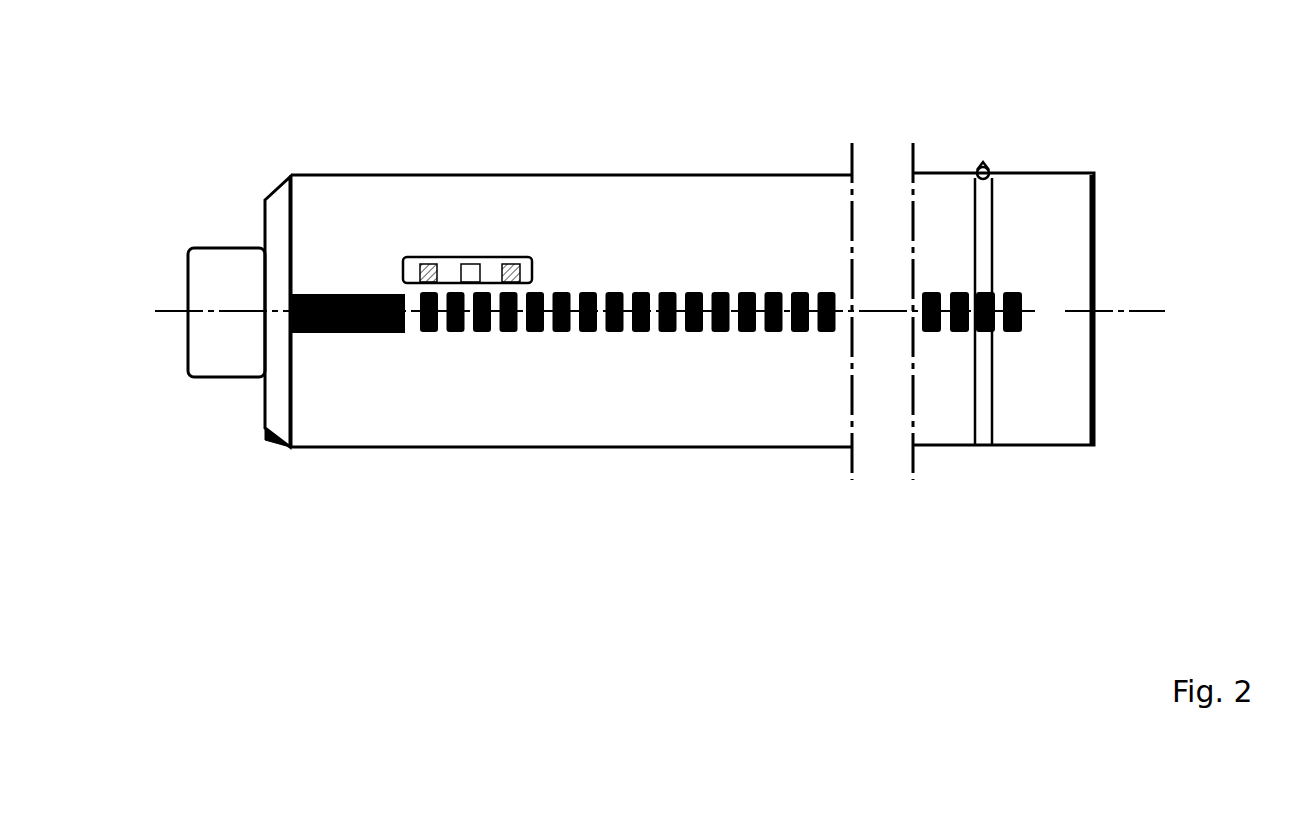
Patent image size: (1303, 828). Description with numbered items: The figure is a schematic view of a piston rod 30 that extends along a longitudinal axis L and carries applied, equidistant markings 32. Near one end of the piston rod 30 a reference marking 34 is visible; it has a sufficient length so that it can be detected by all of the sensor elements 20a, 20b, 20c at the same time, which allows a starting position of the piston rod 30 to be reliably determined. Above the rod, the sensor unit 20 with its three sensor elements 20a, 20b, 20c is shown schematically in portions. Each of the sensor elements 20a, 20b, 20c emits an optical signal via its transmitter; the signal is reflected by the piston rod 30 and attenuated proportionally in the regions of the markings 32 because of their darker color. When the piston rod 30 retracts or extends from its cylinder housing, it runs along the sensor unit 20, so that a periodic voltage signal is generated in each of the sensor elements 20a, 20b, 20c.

The sensor unit 20 is at (506, 301).
The sensor element 20a is at (425, 283).
The sensor element 20b is at (478, 283).
The sensor element 20c is at (520, 264).
The piston rod 30 is at (719, 262).
The marking 32 is at (618, 327).
The reference marking 34 is at (347, 337).
The longitudinal axis L is at (675, 302).